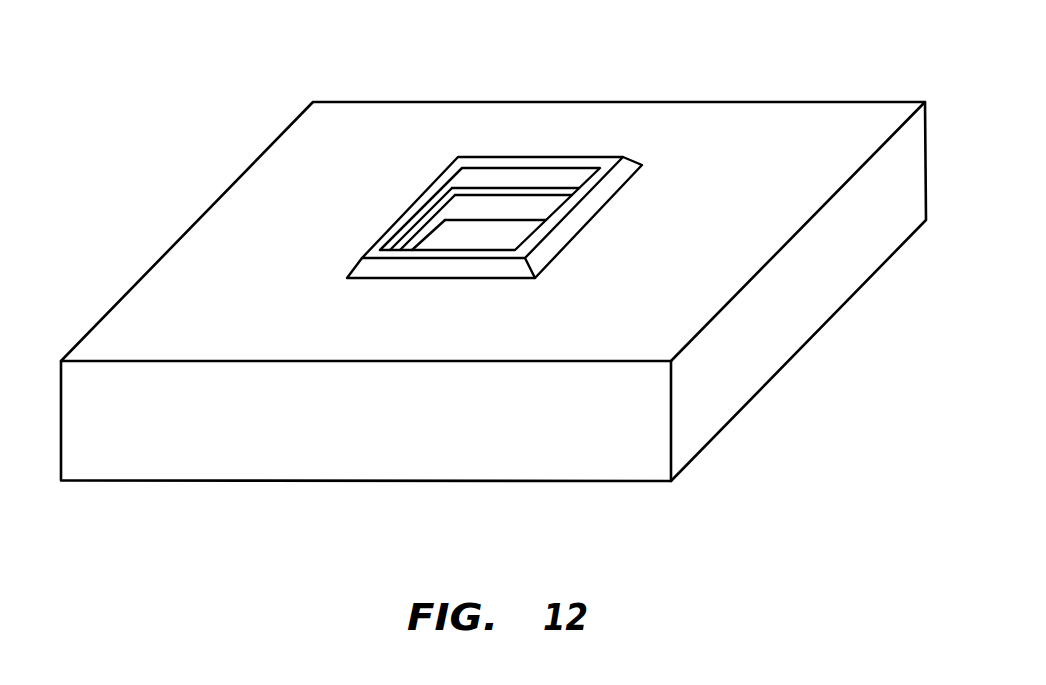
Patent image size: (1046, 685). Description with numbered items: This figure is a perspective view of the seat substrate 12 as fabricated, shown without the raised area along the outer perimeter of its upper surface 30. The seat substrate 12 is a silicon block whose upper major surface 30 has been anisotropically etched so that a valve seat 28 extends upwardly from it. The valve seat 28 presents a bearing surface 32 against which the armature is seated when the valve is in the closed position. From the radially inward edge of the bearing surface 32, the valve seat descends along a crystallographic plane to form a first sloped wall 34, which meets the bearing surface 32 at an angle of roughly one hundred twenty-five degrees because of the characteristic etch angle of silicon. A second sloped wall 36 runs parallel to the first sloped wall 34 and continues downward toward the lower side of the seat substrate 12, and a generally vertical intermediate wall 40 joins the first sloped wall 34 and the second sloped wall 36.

The seat substrate 12 is at (192, 209).
The valve seat 28 is at (622, 173).
The upper major surface 30 is at (817, 128).
The bearing surface 32 is at (443, 177).
The first sloped wall 34 is at (520, 178).
The second sloped wall 36 is at (540, 207).
The intermediate wall 40 is at (438, 210).